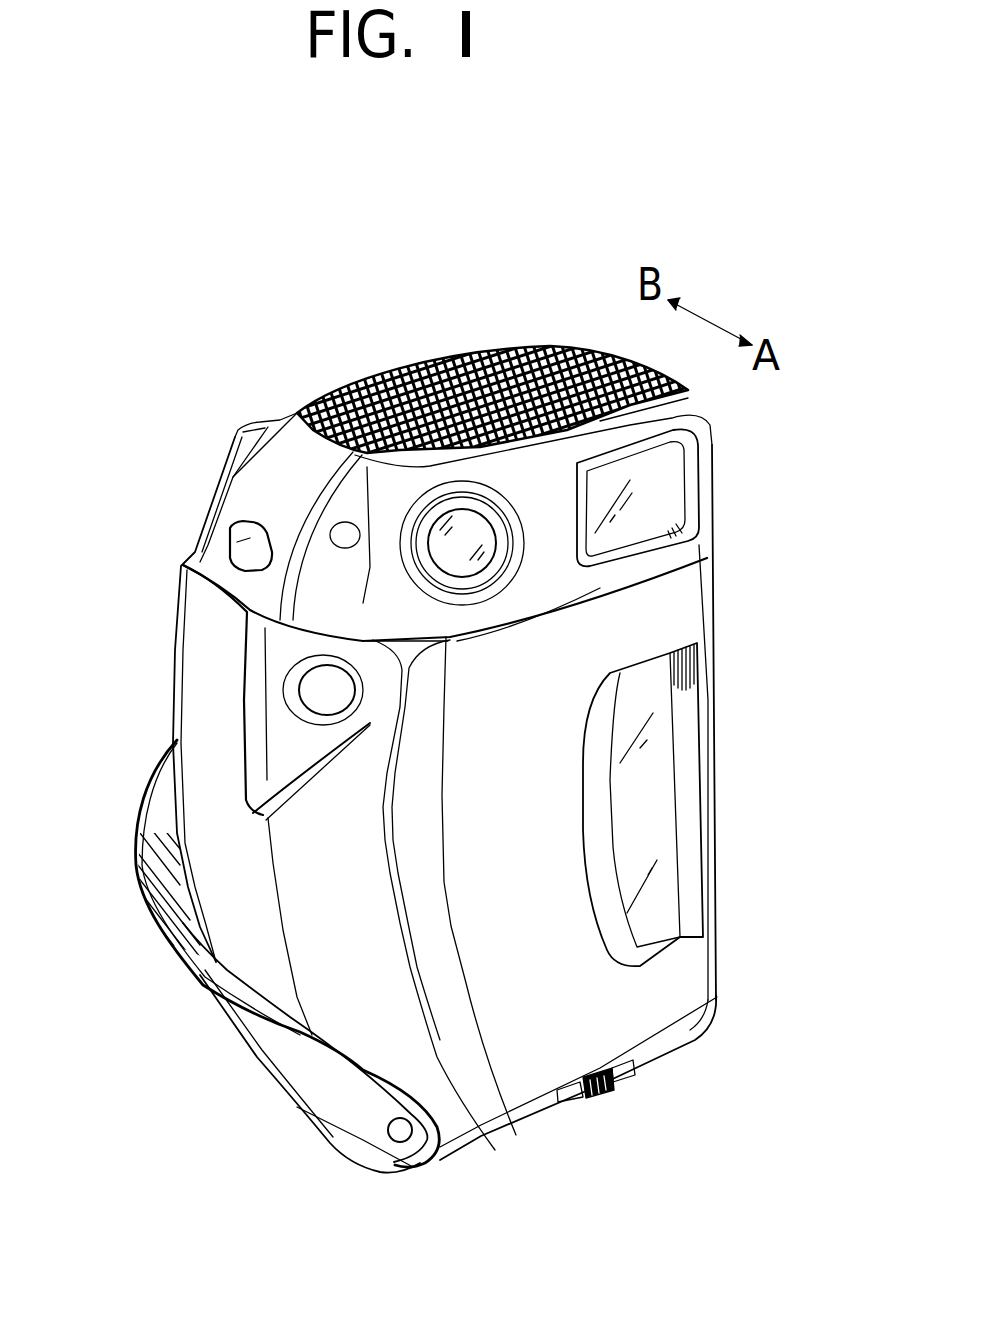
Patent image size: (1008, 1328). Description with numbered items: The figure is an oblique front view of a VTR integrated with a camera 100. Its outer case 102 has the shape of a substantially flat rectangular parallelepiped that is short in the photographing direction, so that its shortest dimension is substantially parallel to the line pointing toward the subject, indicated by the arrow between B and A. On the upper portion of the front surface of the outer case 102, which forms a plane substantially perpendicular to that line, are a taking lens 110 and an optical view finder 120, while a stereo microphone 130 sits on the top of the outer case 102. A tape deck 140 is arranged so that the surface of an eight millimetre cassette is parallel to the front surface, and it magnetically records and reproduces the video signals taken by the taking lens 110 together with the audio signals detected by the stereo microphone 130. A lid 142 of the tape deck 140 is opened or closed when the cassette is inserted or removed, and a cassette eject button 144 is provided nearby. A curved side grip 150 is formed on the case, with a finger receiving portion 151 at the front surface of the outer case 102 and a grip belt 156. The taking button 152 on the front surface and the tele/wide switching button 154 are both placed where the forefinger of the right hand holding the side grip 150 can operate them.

The VTR integrated with a camera 100 is at (499, 282).
The outer case 102 is at (176, 592).
The taking lens 110 is at (472, 563).
The optical view finder 120 is at (658, 496).
The stereo microphone 130 is at (397, 377).
The tape deck 140 is at (718, 757).
The lid 142 is at (697, 978).
The cassette eject button 144 is at (590, 1095).
The side grip 150 is at (240, 957).
The finger receiving portion 151 is at (433, 917).
The taking button 152 is at (316, 690).
The tele/wide switching button 154 is at (247, 542).
The grip belt 156 is at (260, 1055).